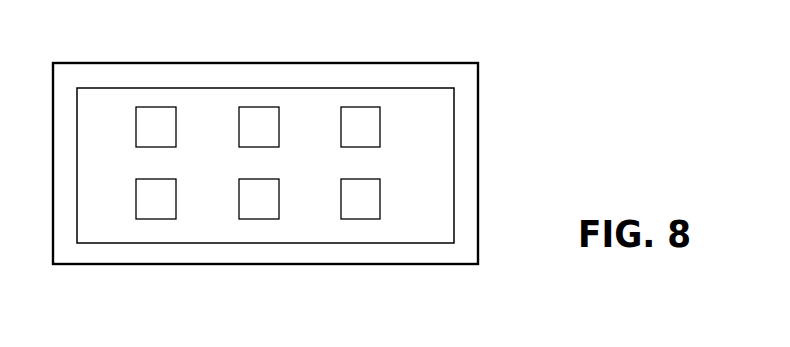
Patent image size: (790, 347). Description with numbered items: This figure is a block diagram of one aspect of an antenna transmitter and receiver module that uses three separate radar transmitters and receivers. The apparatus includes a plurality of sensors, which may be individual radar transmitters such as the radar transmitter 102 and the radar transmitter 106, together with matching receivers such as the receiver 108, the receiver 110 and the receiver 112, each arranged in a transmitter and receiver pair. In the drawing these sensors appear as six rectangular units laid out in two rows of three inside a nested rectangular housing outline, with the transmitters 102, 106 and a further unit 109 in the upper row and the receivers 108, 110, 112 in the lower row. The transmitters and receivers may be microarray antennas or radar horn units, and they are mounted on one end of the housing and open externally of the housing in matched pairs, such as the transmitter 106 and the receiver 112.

The radar transmitter 102 is at (259, 115).
The radar transmitter 106 is at (149, 116).
The radar receiver 108 is at (256, 210).
The light emitting element 109 is at (358, 117).
The radar receiver 110 is at (371, 201).
The radar receiver 112 is at (158, 212).